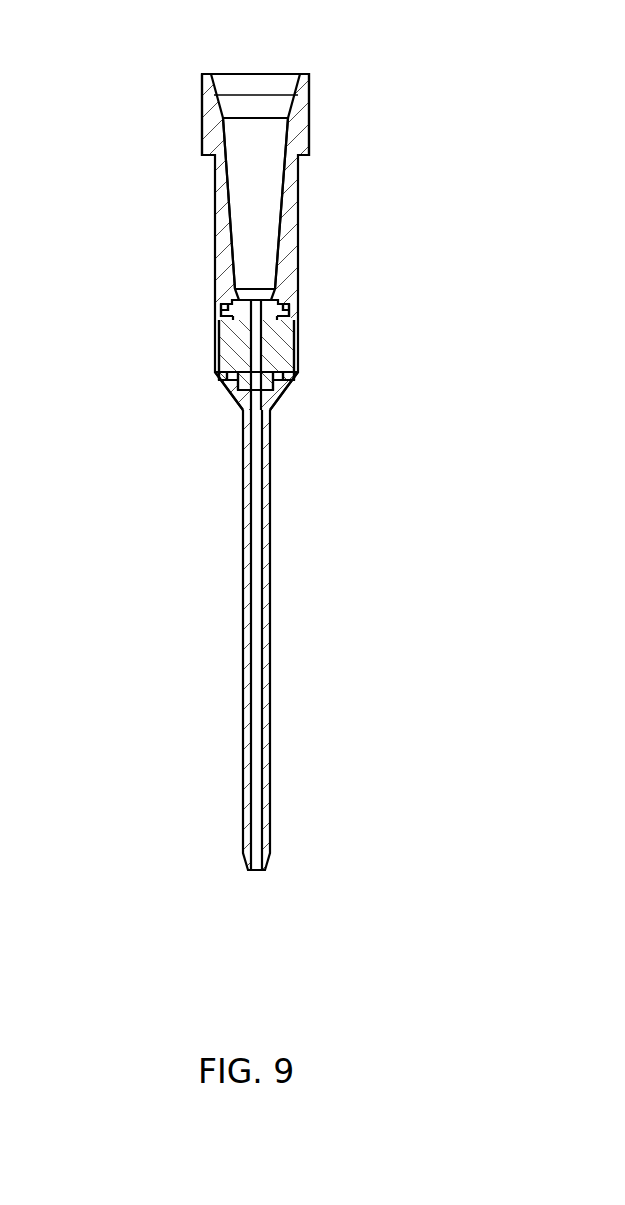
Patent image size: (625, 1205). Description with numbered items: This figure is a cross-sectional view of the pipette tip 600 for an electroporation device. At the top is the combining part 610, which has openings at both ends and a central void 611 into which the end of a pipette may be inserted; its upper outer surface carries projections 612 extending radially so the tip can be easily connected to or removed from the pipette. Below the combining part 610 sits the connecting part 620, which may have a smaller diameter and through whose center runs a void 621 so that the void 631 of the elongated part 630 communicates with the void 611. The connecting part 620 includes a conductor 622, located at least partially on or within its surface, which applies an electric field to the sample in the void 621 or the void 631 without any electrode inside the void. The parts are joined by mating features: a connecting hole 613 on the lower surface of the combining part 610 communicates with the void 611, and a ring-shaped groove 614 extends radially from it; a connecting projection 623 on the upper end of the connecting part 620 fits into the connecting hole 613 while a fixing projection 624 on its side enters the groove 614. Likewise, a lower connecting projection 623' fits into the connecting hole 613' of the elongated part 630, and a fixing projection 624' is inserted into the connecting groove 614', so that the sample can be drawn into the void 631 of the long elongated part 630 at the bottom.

The pipette tip 600 is at (346, 128).
The combining part 610 is at (290, 218).
The void 611 is at (246, 206).
The projections 612 is at (212, 140).
The connecting hole 613 is at (153, 292).
The ring-shaped groove 614 is at (359, 297).
The connecting hole 613' is at (154, 431).
The connecting groove 614' is at (334, 424).
The connecting part 620 is at (322, 302).
The void 621 is at (255, 353).
The conductor 622 is at (235, 338).
The connecting projection 623 is at (335, 279).
The fixing projection 624 is at (152, 271).
The connecting projection 623' is at (334, 441).
The fixing projection 624' is at (154, 408).
The elongated part 630 is at (267, 585).
The void 631 is at (255, 632).